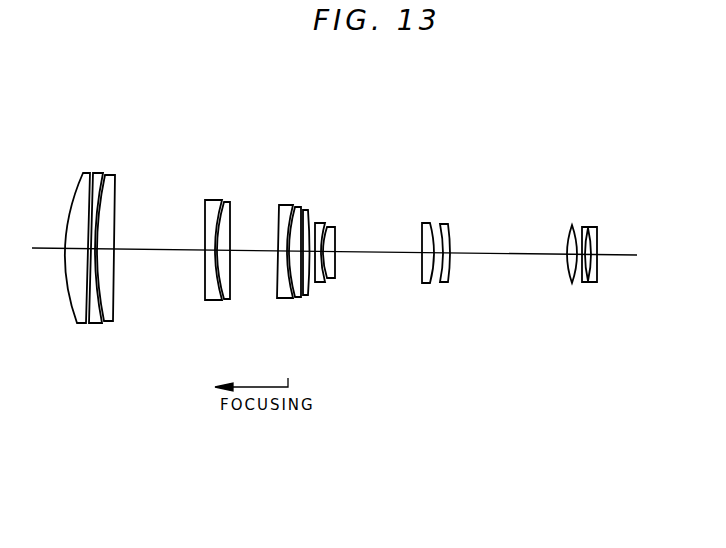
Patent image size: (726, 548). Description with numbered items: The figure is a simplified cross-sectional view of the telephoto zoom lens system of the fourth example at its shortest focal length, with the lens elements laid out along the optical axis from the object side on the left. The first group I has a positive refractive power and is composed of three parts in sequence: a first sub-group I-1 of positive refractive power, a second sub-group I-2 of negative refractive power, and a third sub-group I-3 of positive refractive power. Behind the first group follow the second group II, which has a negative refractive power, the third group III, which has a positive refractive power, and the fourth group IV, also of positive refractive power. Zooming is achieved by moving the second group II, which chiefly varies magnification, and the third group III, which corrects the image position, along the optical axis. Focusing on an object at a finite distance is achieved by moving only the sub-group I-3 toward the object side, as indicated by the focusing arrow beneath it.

The first lens group I is at (60, 137).
The first sub-group I-1 is at (118, 327).
The second sub-group I-2 is at (233, 303).
The third sub-group I-3 is at (310, 304).
The second lens group II is at (318, 286).
The third lens group III is at (415, 289).
The fourth lens group IV is at (602, 291).